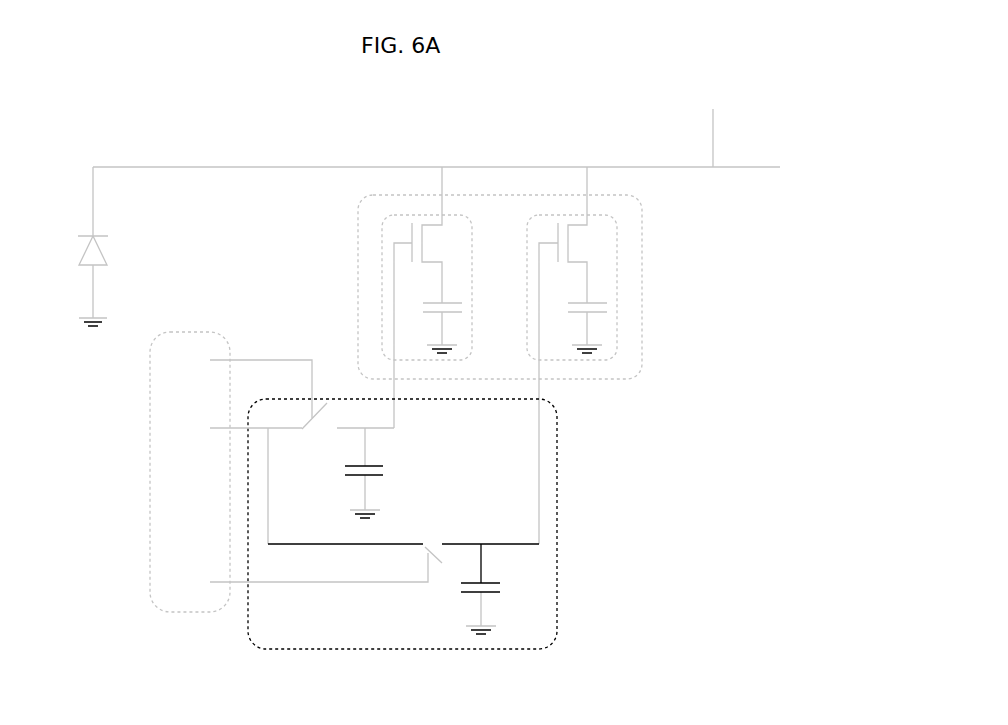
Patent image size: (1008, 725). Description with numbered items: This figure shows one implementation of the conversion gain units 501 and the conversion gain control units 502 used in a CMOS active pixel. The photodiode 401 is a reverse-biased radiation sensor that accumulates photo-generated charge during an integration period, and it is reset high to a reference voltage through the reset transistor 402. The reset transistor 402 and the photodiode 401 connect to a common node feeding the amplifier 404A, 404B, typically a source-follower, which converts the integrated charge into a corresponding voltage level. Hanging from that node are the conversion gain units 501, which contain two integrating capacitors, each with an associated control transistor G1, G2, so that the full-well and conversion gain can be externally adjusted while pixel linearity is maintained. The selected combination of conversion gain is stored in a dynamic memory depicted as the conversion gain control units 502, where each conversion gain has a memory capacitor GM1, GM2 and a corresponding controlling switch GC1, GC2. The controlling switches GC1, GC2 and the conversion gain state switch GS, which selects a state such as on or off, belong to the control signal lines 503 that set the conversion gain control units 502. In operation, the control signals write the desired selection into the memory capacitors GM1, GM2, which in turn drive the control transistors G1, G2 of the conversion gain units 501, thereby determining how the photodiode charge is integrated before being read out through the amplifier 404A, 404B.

The photodiode 401 is at (77, 246).
The transistor 402 is at (718, 125).
The amplifier 404A is at (495, 167).
The amplifier 404B is at (495, 167).
The conversion gain units 501 is at (575, 355).
The conversion gain control units 502 is at (473, 524).
The control signal lines 503 is at (227, 472).
The control transistor G1 is at (427, 297).
The control transistor G2 is at (572, 355).
The memory capacitor GM1 is at (384, 473).
The memory capacitor GM2 is at (501, 589).
The controlling switch GC1 is at (242, 384).
The conversion gain state switch GS is at (239, 432).
The controlling switch GC2 is at (300, 572).